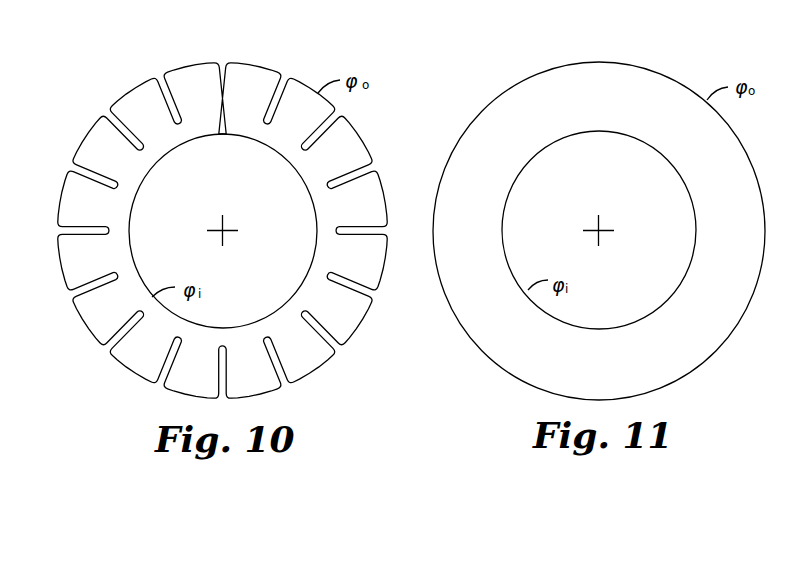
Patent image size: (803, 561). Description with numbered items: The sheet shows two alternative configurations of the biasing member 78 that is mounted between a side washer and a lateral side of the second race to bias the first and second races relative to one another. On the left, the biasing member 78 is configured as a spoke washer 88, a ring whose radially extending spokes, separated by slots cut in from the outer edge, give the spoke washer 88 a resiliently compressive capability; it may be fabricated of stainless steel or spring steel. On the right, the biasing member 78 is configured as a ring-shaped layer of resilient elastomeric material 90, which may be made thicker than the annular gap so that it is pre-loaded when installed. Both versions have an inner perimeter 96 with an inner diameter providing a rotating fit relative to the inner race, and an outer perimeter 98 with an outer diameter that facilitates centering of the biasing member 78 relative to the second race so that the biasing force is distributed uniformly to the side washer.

In FIG. 10, the biasing member 78 is at (110, 64).
In FIG. 11, the biasing member 78 is at (480, 64).
In FIG. 10, the spoke washer 88 is at (222, 216).
In FIG. 11, the layer of resilient elastomeric material 90 is at (599, 220).
In FIG. 10, the outer perimeter 98 is at (265, 65).
In FIG. 11, the outer perimeter 98 is at (655, 70).
In FIG. 10, the inner perimeter 96 is at (265, 145).
In FIG. 11, the inner perimeter 96 is at (660, 153).